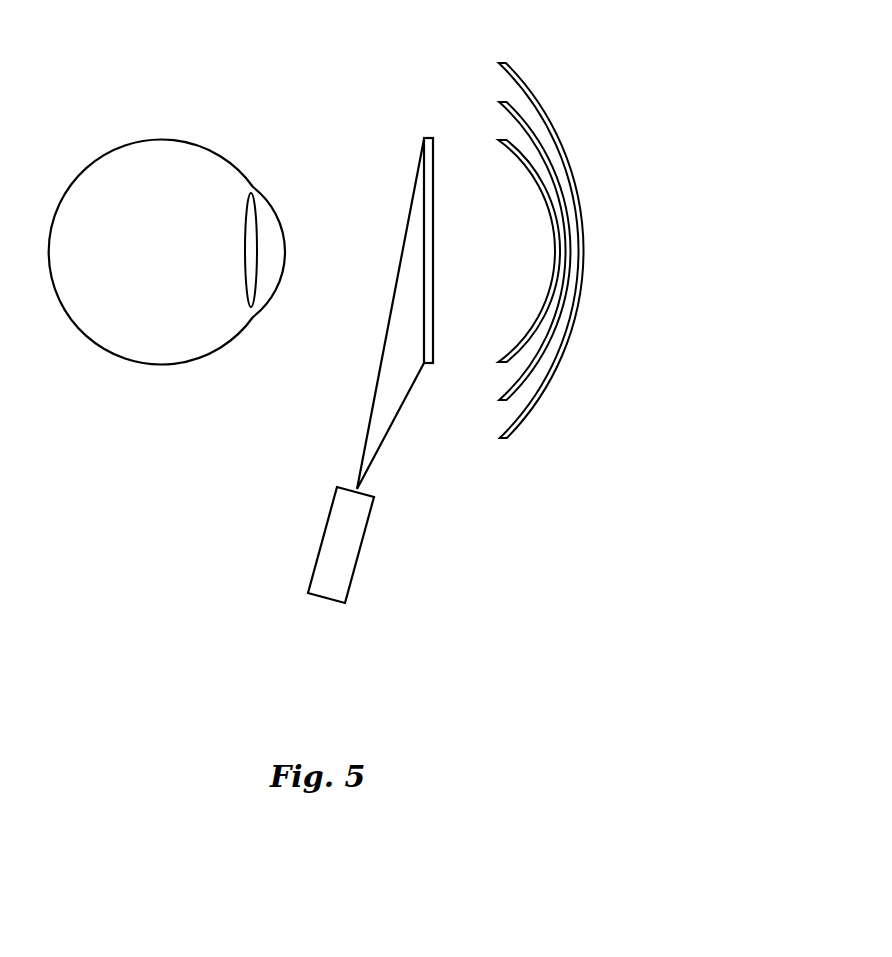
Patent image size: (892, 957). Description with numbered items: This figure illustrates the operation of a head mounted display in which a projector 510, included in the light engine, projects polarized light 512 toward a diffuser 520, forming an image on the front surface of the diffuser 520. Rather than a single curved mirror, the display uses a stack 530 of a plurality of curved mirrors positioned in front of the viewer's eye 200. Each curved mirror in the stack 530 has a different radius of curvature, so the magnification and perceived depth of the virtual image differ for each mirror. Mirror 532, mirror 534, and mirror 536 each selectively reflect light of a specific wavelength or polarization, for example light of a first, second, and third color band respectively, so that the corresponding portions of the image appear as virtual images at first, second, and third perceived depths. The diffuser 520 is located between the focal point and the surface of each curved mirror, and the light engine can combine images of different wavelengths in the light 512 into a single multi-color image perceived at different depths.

The eye 200 is at (163, 137).
The projector 510 is at (365, 533).
The polarized light 512 is at (360, 436).
The diffuser 520 is at (433, 350).
The stack of curved mirrors 530 is at (539, 226).
The mirror 532 is at (498, 140).
The mirror 534 is at (498, 101).
The mirror 536 is at (498, 63).